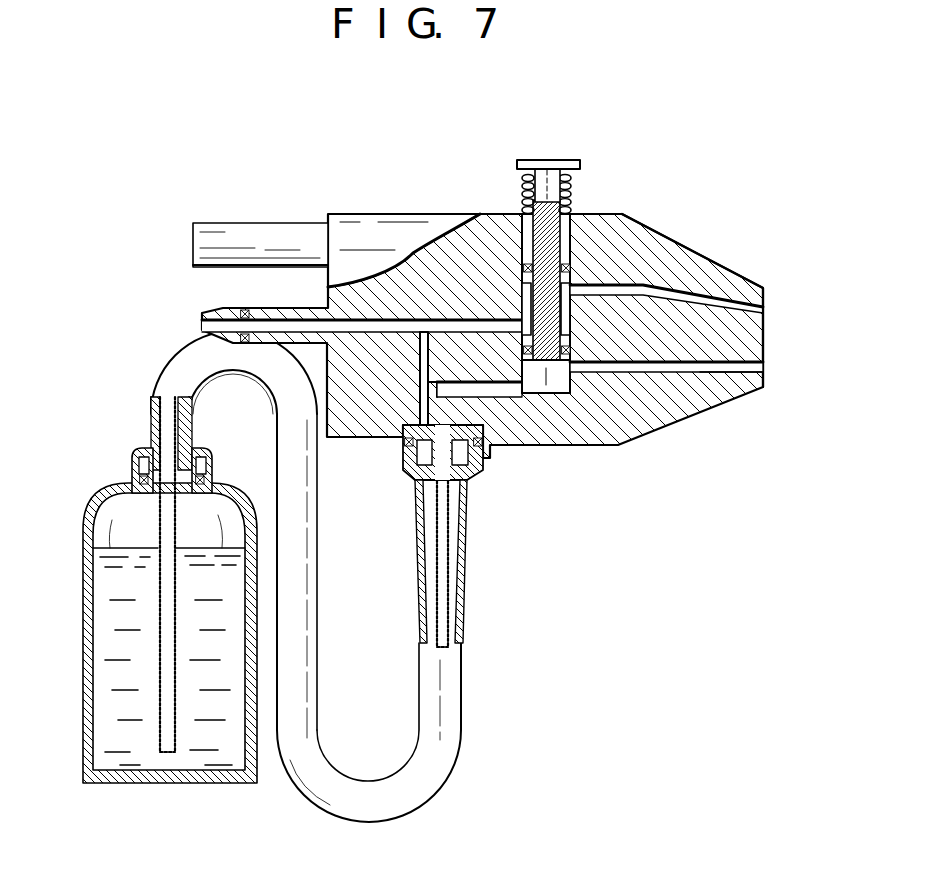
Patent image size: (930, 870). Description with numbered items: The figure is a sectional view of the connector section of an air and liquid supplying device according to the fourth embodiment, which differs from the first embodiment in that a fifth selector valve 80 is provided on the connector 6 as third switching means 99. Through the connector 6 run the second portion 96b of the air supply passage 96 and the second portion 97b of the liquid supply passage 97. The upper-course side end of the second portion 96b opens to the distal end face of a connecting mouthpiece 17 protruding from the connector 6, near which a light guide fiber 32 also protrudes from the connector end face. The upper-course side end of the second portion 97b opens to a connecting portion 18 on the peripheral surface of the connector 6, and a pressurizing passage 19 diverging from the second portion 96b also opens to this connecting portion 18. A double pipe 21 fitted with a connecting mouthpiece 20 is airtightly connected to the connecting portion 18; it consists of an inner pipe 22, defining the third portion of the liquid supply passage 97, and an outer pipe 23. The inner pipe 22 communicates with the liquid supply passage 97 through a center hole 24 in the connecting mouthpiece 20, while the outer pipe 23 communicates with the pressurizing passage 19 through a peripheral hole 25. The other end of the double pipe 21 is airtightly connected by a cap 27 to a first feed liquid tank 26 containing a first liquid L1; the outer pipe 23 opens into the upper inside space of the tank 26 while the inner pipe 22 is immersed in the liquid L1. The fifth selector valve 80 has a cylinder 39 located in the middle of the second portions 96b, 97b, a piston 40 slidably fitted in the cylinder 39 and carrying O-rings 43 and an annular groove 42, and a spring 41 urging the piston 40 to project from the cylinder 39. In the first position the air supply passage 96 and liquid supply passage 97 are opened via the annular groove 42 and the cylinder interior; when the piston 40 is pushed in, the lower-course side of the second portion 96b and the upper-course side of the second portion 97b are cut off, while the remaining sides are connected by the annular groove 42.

The connector 6 is at (365, 225).
The connecting mouthpiece 17 is at (240, 312).
The connecting portion 18 is at (485, 450).
The pressurizing passage 19 is at (423, 370).
The connecting mouthpiece 20 is at (478, 490).
The double pipe 21 is at (474, 637).
The inner pipe 22 is at (186, 410).
The outer pipe 23 is at (150, 424).
The center hole 24 is at (560, 380).
The peripheral hole 25 is at (420, 450).
The first feed liquid tank 26 is at (92, 580).
The cap 27 is at (204, 463).
The light guide fiber 32 is at (248, 232).
The cylinder 39 is at (566, 356).
The piston 40 is at (522, 240).
The spring 41 is at (522, 180).
The annular groove 42 is at (600, 330).
The O-rings 43 is at (572, 270).
The fifth selector valve 80 is at (580, 247).
The air supply passage 96 is at (722, 292).
The second portion of the air supply passage 96b is at (467, 320).
The liquid supply passage 97 is at (688, 376).
The second portion of the liquid supply passage 97b is at (730, 372).
The third switching means 99 is at (562, 150).
The first liquid L1 is at (128, 547).